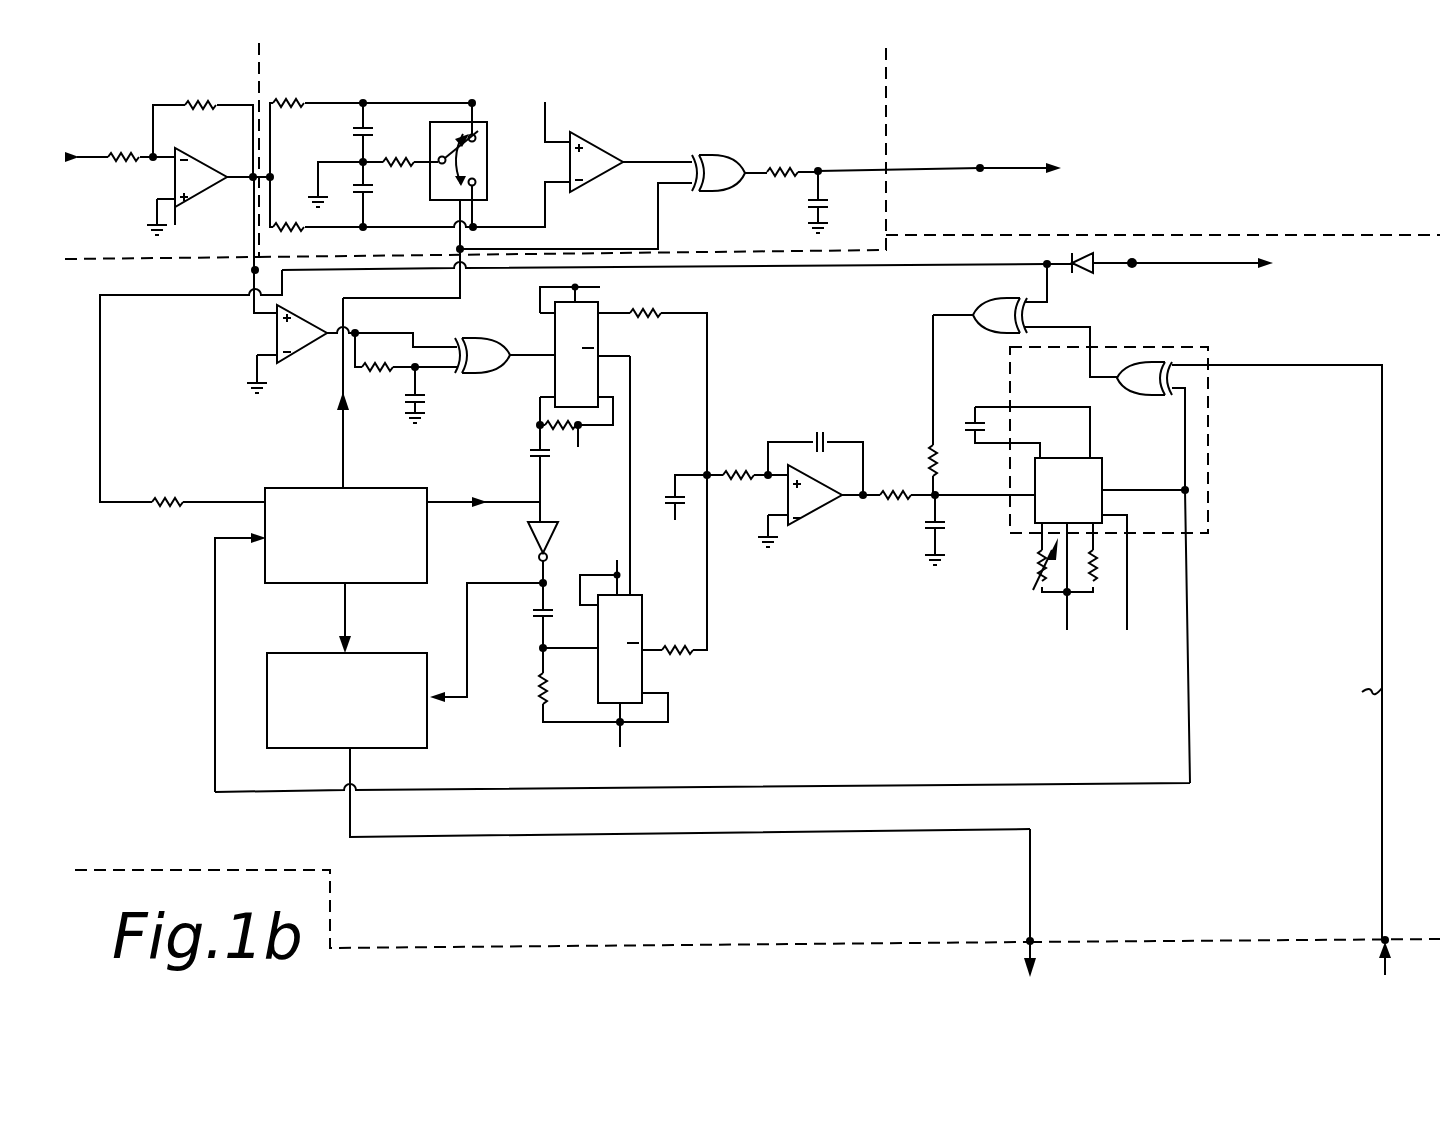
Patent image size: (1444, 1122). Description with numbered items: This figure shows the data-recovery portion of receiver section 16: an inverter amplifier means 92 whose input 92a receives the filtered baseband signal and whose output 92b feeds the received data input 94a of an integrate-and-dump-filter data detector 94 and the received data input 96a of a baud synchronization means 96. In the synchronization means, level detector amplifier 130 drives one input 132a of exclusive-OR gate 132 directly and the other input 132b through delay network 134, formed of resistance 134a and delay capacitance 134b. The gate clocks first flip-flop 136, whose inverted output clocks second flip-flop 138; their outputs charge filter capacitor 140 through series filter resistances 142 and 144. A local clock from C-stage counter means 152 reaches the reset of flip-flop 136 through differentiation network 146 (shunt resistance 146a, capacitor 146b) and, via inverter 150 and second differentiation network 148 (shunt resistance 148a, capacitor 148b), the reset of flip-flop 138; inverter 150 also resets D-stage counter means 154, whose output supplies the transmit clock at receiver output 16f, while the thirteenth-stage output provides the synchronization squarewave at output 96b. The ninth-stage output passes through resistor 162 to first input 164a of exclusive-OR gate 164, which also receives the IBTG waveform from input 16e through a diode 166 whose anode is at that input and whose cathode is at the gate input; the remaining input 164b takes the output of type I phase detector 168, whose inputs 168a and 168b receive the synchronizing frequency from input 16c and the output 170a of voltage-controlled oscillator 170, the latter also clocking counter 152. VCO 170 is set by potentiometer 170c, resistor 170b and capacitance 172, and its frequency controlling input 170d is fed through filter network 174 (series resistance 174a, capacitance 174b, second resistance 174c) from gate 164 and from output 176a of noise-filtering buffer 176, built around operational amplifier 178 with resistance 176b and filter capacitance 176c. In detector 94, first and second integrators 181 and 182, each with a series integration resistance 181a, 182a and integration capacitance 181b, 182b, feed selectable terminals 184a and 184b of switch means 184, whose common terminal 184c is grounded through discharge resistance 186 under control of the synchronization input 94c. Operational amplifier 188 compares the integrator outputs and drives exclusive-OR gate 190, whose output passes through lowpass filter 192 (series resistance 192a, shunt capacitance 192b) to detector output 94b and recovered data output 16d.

The inverter amplifier means 92 is at (110, 240).
The input of inverter amplifier means 92a is at (145, 152).
The output of inverter amplifier means 92b is at (252, 187).
The integrate-and-dump-filter data detector 94 is at (537, 80).
The received data input of detector 94a is at (270, 142).
The detector means output 94b is at (876, 164).
The synchronization signal input of detector 94c is at (456, 251).
The baud synchronization means 96 is at (375, 937).
The received data input of baud synchronization means 96a is at (249, 274).
The output of baud synchronization means 96b is at (463, 270).
The receiver section 16 is at (1393, 823).
The receiver section input 16c is at (1376, 936).
The receiver output 16d is at (980, 164).
The receiver section input 16e is at (1140, 268).
The receiver section output 16f is at (1033, 938).
The operational amplifier 130 is at (312, 351).
The two-input exclusive-OR gate 132 is at (504, 340).
The gate input 132a is at (414, 336).
The gate second input 132b is at (445, 374).
The delay network 134 is at (394, 414).
The resistance 134a is at (395, 371).
The delay capacitance 134b is at (425, 406).
The first D-type flip-flop 136 is at (600, 325).
The second D-type flip-flop 138 is at (642, 621).
The filter capacitor 140 is at (674, 492).
The series filter resistance 142 is at (655, 318).
The series filter resistance 144 is at (684, 658).
The differentiation network 146 is at (565, 470).
The shunt resistance 146a is at (565, 432).
The differentiating capacitor 146b is at (529, 452).
The second differentiation network 148 is at (537, 738).
The shunt resistance 148a is at (539, 701).
The differentiation capacitor 148b is at (547, 620).
The inverter 150 is at (549, 546).
The C-stage counter means 152 is at (287, 488).
The D-stage counter means 154 is at (294, 653).
The resistor 162 is at (166, 507).
The two-input exclusive-OR gate 164 is at (988, 299).
The first input of gate 164a is at (1050, 298).
The remaining input of gate 164b is at (1065, 325).
The diode 166 is at (1098, 268).
The type I phase detector 168 is at (1212, 369).
The first phase detector input 168a is at (1181, 349).
The remaining phase detector input 168b is at (1170, 398).
The voltage-controlled oscillator means 170 is at (1068, 458).
The output of VCO 170a is at (1152, 490).
The fixed frequency setting resistor 170b is at (1096, 584).
The frequency-setting potentiometer 170c is at (1033, 590).
The frequency controlling input of VCO 170d is at (978, 491).
The frequency-setting capacitance 172 is at (965, 419).
The filter network 174 is at (898, 568).
The series resistance 174a is at (927, 456).
The network filter capacitance 174b is at (938, 536).
The second network resistance 174c is at (894, 490).
The noise-filtering buffer means 176 is at (791, 562).
The output of buffer means 176a is at (862, 504).
The resistance 176b is at (735, 468).
The filter capacitance 176c is at (829, 436).
The operational amplifier 178 is at (824, 508).
The first integrator 181 is at (302, 211).
The series integration resistance 181a is at (298, 230).
The integration capacitance 181b is at (366, 190).
The second integrator 182 is at (323, 148).
The series integration resistance 182a is at (288, 100).
The integration capacitance 182b is at (372, 133).
The single-pole, double-throw switch means 184 is at (490, 159).
The first selectable contact terminal 184a is at (496, 192).
The second selectable contact terminal 184b is at (482, 131).
The common terminal 184c is at (438, 157).
The discharge resistance 186 is at (388, 168).
The operational amplifier 188 is at (598, 139).
The two-input exclusive-OR gate 190 is at (714, 151).
The lowpass filter 192 is at (781, 208).
The series resistance 192a is at (782, 163).
The shunt filter capacitance 192b is at (830, 200).